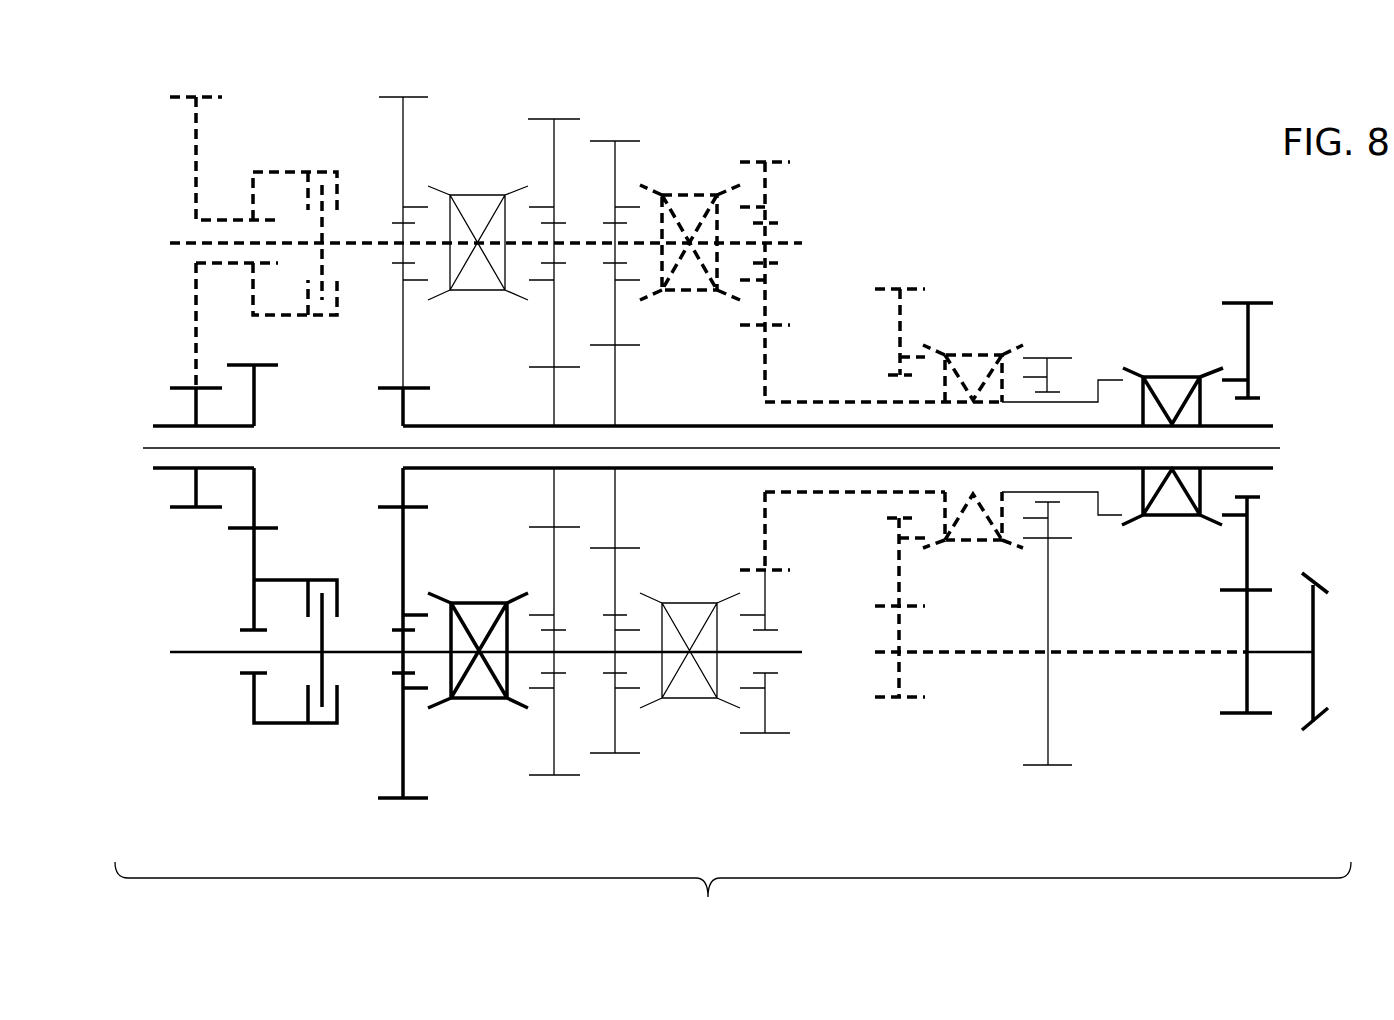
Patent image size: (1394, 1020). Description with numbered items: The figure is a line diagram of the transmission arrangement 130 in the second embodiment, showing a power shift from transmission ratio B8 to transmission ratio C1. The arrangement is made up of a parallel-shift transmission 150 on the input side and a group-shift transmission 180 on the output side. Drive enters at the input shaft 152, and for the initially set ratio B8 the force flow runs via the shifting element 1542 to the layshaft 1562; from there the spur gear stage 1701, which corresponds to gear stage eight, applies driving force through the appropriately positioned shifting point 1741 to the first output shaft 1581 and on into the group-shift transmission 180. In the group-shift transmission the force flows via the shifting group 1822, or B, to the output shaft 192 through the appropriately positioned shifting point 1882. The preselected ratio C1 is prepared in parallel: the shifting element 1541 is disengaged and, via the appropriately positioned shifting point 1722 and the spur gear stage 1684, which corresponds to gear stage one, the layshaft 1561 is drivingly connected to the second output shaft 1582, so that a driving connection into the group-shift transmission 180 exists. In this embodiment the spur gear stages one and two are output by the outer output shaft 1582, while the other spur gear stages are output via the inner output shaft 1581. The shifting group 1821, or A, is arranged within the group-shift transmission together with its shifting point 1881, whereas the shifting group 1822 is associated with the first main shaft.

The transmission arrangement 130 is at (733, 896).
The parallel-shift transmission 150 is at (476, 53).
The group-shift transmission 180 is at (1193, 58).
The input shaft 152 is at (167, 425).
The shifting element 1541 is at (294, 172).
The shifting element 1542 is at (293, 723).
The layshaft 1561 is at (797, 241).
The layshaft 1562 is at (790, 655).
The first output shaft 1581 is at (483, 468).
The second output shaft 1582 is at (830, 402).
The spur gear stage 1684 is at (773, 312).
The spur gear stage 1701 is at (397, 493).
The shifting point 1722 is at (697, 193).
The shifting point 1741 is at (483, 698).
The shifting group 1821 is at (891, 594).
The shifting group 1822 is at (1236, 577).
The shifting point 1881 is at (983, 350).
The shifting point 1882 is at (1172, 377).
The output shaft 192 is at (1170, 652).